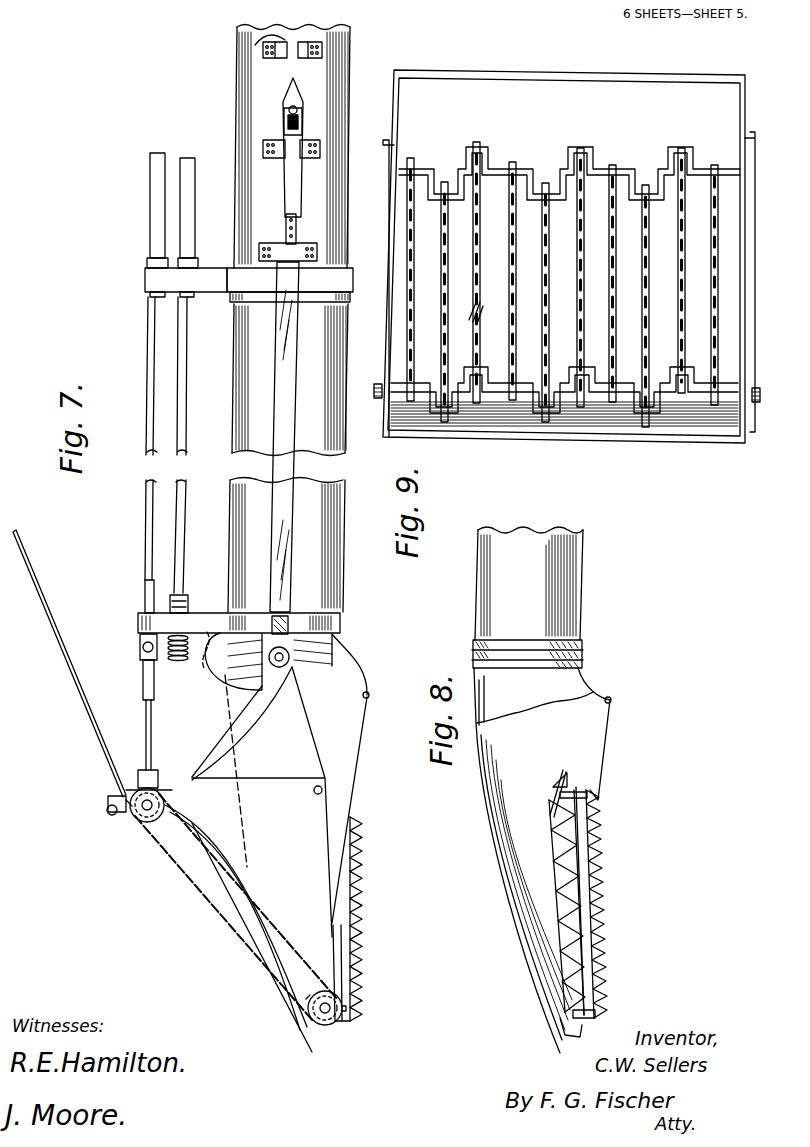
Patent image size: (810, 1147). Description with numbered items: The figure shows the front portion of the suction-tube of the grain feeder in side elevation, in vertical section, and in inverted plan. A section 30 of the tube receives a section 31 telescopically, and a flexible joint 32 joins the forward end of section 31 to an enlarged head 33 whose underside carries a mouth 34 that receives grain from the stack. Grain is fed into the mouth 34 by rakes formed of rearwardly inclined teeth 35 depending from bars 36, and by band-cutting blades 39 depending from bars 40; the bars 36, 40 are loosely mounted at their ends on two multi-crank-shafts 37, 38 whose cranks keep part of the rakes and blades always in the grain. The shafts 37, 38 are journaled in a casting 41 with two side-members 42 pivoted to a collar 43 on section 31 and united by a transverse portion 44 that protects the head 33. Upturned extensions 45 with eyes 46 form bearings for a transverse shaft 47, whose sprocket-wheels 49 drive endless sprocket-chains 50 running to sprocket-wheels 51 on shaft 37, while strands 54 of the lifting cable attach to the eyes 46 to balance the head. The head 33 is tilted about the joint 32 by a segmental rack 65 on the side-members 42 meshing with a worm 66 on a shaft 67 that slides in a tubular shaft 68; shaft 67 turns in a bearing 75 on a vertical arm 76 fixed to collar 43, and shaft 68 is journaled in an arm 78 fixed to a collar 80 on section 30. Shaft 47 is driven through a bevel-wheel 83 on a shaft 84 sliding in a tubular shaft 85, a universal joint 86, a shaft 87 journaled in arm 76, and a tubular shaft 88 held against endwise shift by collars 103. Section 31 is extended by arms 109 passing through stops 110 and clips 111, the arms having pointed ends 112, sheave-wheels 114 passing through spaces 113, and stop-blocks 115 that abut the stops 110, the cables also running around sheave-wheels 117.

In FIG. 7, the section 30 is at (238, 122).
In FIG. 7, the section 31 is at (286, 546).
In FIG. 8, the section 31 is at (529, 583).
In FIG. 7, the flexible joint 32 is at (340, 656).
In FIG. 8, the flexible joint 32 is at (585, 655).
In FIG. 7, the enlarged head 33 is at (275, 975).
In FIG. 9, the enlarged head 33 is at (578, 418).
In FIG. 8, the enlarged head 33 is at (520, 916).
In FIG. 9, the mouth 34 is at (566, 111).
In FIG. 8, the mouth 34 is at (610, 738).
In FIG. 7, the teeth 35 is at (360, 700).
In FIG. 9, the teeth 35 is at (443, 262).
In FIG. 8, the teeth 35 is at (562, 884).
In FIG. 9, the bars 36 is at (712, 272).
In FIG. 8, the bars 36 is at (550, 848).
In FIG. 7, the multi-crank-shaft 37 is at (338, 1022).
In FIG. 9, the multi-crank-shaft 37 is at (463, 400).
In FIG. 8, the multi-crank-shaft 37 is at (574, 1034).
In FIG. 7, the multi-crank-shaft 38 is at (323, 788).
In FIG. 9, the multi-crank-shaft 38 is at (498, 167).
In FIG. 8, the multi-crank-shaft 38 is at (552, 804).
In FIG. 7, the blades 39 is at (365, 950).
In FIG. 9, the blades 39 is at (480, 312).
In FIG. 8, the blades 39 is at (572, 960).
In FIG. 7, the bars 40 is at (360, 888).
In FIG. 9, the bars 40 is at (486, 240).
In FIG. 8, the bars 40 is at (602, 896).
In FIG. 7, the casting 41 is at (252, 937).
In FIG. 7, the side-members 42 is at (279, 802).
In FIG. 9, the side-members 42 is at (386, 250).
In FIG. 7, the collar 43 is at (342, 628).
In FIG. 7, the transverse portion 44 is at (308, 1045).
In FIG. 9, the transverse portion 44 is at (618, 434).
In FIG. 7, the upturned extensions 45 is at (237, 746).
In FIG. 7, the eyes 46 is at (114, 814).
In FIG. 7, the transverse shaft 47 is at (145, 820).
In FIG. 7, the sprocket-wheels 49 is at (152, 830).
In FIG. 9, the sprocket-wheels 49 is at (378, 382).
In FIG. 7, the endless sprocket-chains 50 is at (222, 920).
In FIG. 7, the sprocket-wheels 51 is at (328, 1028).
In FIG. 7, the strands 54 is at (69, 663).
In FIG. 7, the segmental rack 65 is at (213, 749).
In FIG. 7, the worm 66 is at (172, 657).
In FIG. 7, the shaft 67 is at (188, 545).
In FIG. 7, the tubular shaft 68 is at (188, 158).
In FIG. 7, the bearing 75 is at (188, 604).
In FIG. 7, the vertical arm 76 is at (138, 626).
In FIG. 7, the arm 78 is at (146, 280).
In FIG. 7, the collar 80 is at (240, 282).
In FIG. 7, the bevel-wheel 83 is at (138, 778).
In FIG. 7, the shaft 84 is at (152, 702).
In FIG. 7, the tubular shaft 85 is at (143, 680).
In FIG. 7, the universal joint 86 is at (140, 646).
In FIG. 7, the shaft 87 is at (150, 552).
In FIG. 7, the tubular shaft 88 is at (154, 153).
In FIG. 7, the collars 103 is at (150, 262).
In FIG. 7, the arms 109 is at (284, 437).
In FIG. 7, the stops 110 is at (280, 252).
In FIG. 7, the clips 111 is at (278, 160).
In FIG. 7, the pointed ends 112 is at (302, 116).
In FIG. 7, the spaces 113 is at (282, 55).
In FIG. 7, the sheave-wheels 114 is at (286, 92).
In FIG. 7, the stop-blocks 115 is at (297, 226).
In FIG. 7, the sheave-wheels 117 is at (280, 615).